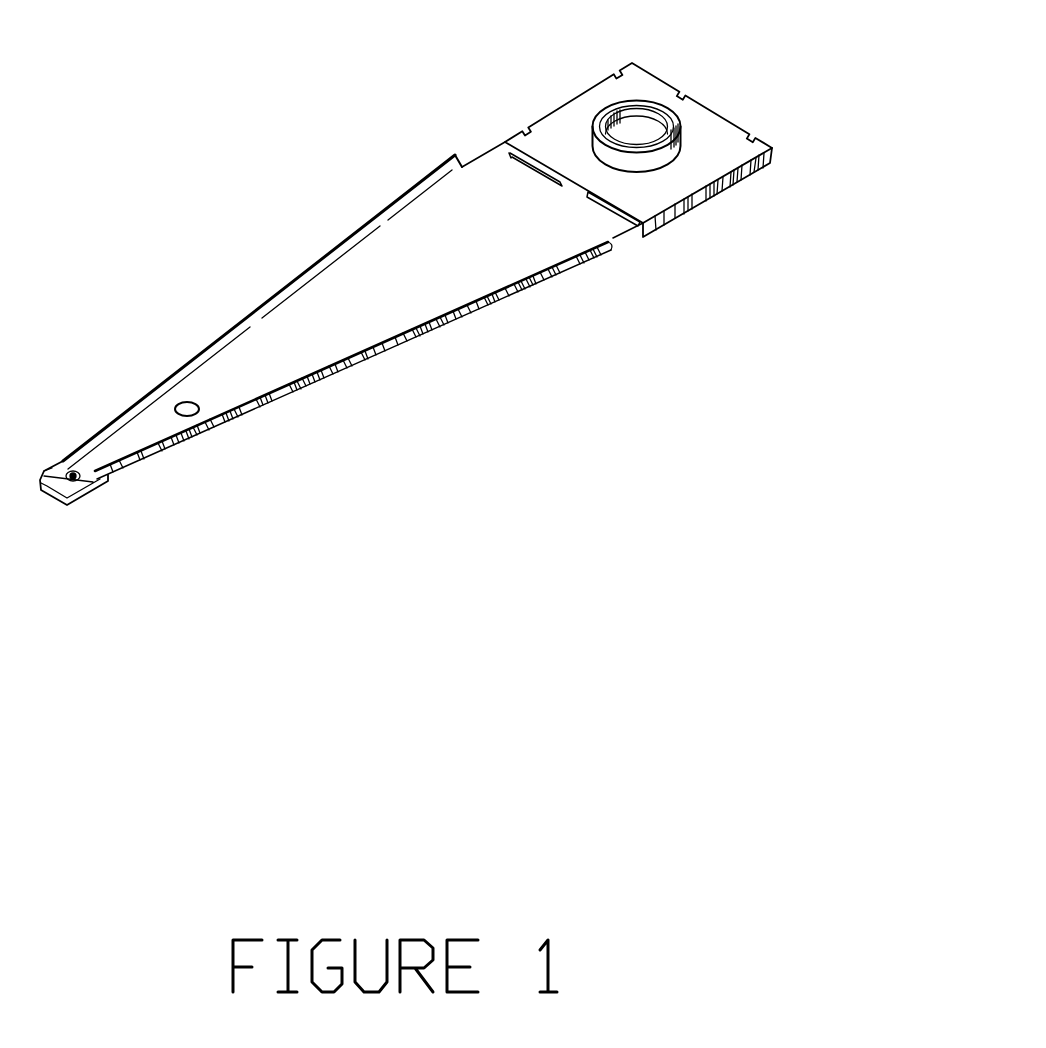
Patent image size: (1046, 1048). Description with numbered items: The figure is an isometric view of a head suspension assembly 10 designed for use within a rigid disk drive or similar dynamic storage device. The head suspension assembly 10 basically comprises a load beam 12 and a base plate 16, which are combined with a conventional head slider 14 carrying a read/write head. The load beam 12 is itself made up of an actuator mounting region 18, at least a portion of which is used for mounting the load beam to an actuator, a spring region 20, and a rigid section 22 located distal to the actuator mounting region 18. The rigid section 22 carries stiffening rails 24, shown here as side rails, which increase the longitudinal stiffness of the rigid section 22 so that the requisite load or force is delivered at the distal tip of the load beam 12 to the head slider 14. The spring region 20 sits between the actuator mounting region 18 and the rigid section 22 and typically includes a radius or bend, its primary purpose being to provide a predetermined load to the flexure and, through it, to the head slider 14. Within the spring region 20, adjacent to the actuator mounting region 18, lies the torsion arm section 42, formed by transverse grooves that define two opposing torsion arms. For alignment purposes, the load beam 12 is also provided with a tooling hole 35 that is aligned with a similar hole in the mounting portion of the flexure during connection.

The head suspension assembly 10 is at (444, 289).
The load beam 12 is at (326, 360).
The head slider 14 is at (87, 498).
The base plate 16 is at (638, 124).
The actuator mounting region 18 is at (655, 85).
The spring region 20 is at (623, 245).
The rigid section 22 is at (403, 303).
The stiffening rails 24 is at (209, 348).
The tooling hole 35 is at (184, 402).
The torsion arm section 42 is at (500, 148).